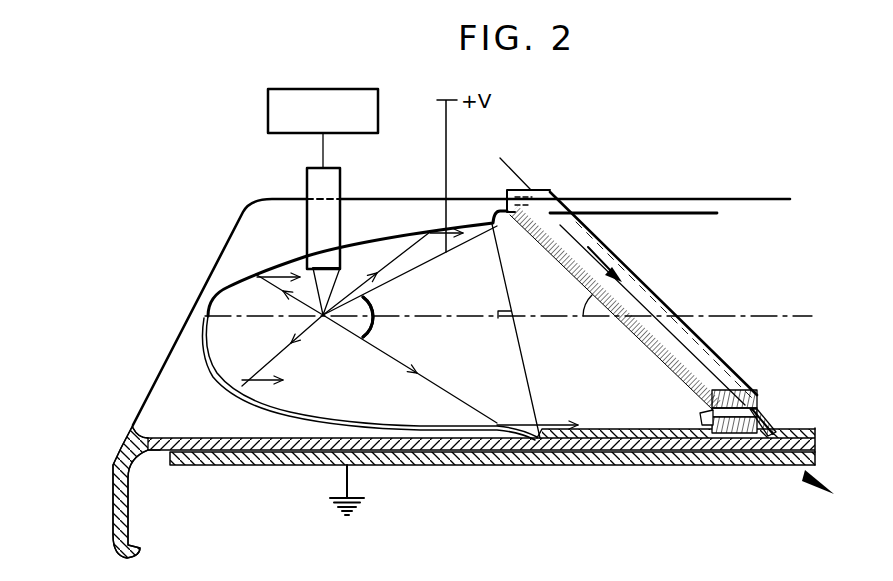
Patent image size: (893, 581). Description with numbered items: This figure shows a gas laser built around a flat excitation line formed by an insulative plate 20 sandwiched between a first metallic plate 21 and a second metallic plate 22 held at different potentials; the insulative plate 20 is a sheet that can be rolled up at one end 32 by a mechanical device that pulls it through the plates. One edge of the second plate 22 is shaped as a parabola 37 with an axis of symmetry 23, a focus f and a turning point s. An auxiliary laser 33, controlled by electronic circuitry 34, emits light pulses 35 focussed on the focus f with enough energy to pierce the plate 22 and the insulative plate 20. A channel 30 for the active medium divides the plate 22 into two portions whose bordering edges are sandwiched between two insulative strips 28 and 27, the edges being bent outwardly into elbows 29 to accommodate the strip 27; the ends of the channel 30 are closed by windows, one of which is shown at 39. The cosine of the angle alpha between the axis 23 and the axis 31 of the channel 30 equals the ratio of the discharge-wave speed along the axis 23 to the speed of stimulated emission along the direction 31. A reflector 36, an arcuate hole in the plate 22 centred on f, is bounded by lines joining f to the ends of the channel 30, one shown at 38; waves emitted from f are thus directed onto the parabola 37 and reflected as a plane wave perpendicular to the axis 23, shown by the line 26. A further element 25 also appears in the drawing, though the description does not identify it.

The insulative plate 20 is at (128, 483).
The first metallic plate 21 is at (238, 455).
The second metallic plate 22 is at (356, 296).
The axis of symmetry 23 is at (757, 316).
The lamp 25 is at (365, 295).
The line 26 is at (498, 273).
The insulative strip 27 is at (733, 417).
The insulative strip 28 is at (733, 390).
The elbows 29 is at (700, 418).
The channel 30 is at (723, 433).
The axis of the channel 31 is at (610, 256).
The end of the insulative plate 32 is at (133, 523).
The auxiliary laser 33 is at (312, 186).
The electronic circuitry 34 is at (288, 106).
The light pulses 35 is at (313, 278).
The reflector 36 is at (383, 327).
The parabola 37 is at (283, 404).
The line 38 is at (437, 265).
The window 39 is at (550, 192).